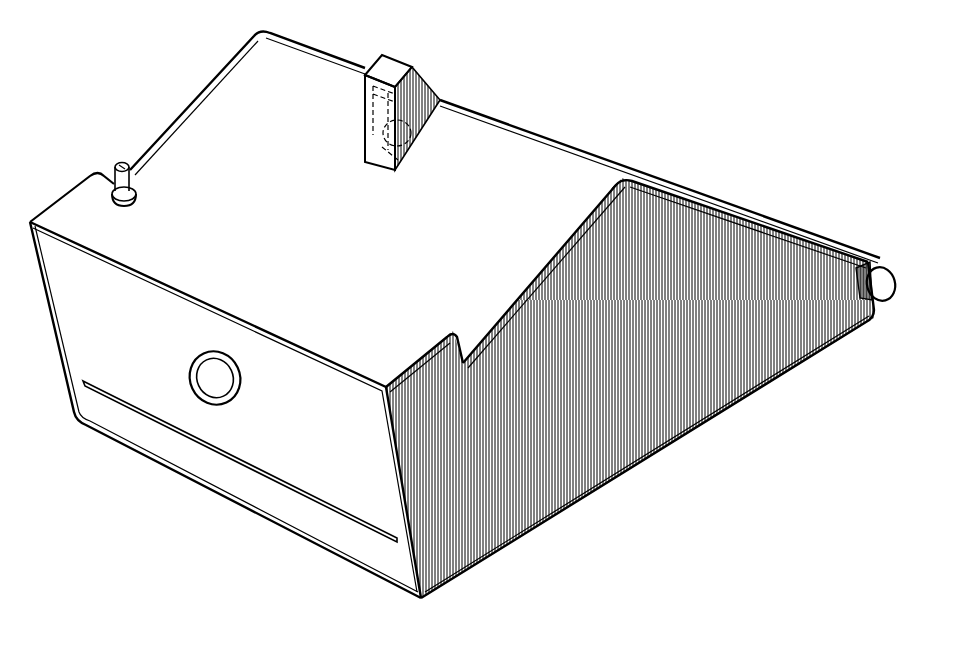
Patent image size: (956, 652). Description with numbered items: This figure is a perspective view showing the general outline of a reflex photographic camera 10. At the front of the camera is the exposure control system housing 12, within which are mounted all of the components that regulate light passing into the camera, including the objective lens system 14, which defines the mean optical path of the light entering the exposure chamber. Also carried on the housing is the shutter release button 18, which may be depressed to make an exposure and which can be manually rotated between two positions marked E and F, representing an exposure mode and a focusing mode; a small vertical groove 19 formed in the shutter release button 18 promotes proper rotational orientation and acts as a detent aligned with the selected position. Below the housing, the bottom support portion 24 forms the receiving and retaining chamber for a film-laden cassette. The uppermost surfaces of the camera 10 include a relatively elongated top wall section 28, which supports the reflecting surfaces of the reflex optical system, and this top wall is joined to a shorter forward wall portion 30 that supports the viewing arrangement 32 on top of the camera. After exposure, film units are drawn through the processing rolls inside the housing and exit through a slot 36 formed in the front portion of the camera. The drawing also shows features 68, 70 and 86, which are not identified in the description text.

The photographic camera 10 is at (720, 175).
The exposure control system housing 12 is at (336, 290).
The objective lens system 14 is at (243, 399).
The shutter release button 18 is at (119, 162).
The vertical groove 19 is at (114, 195).
The bottom support portion 24 is at (736, 396).
The top wall section 28 is at (622, 172).
The forward wall portion 30 is at (528, 172).
The viewing arrangement 32 is at (417, 64).
The slot 36 is at (340, 507).
The hidden bore 68 is at (363, 90).
The gusset 70 is at (438, 103).
The knob 86 is at (882, 282).